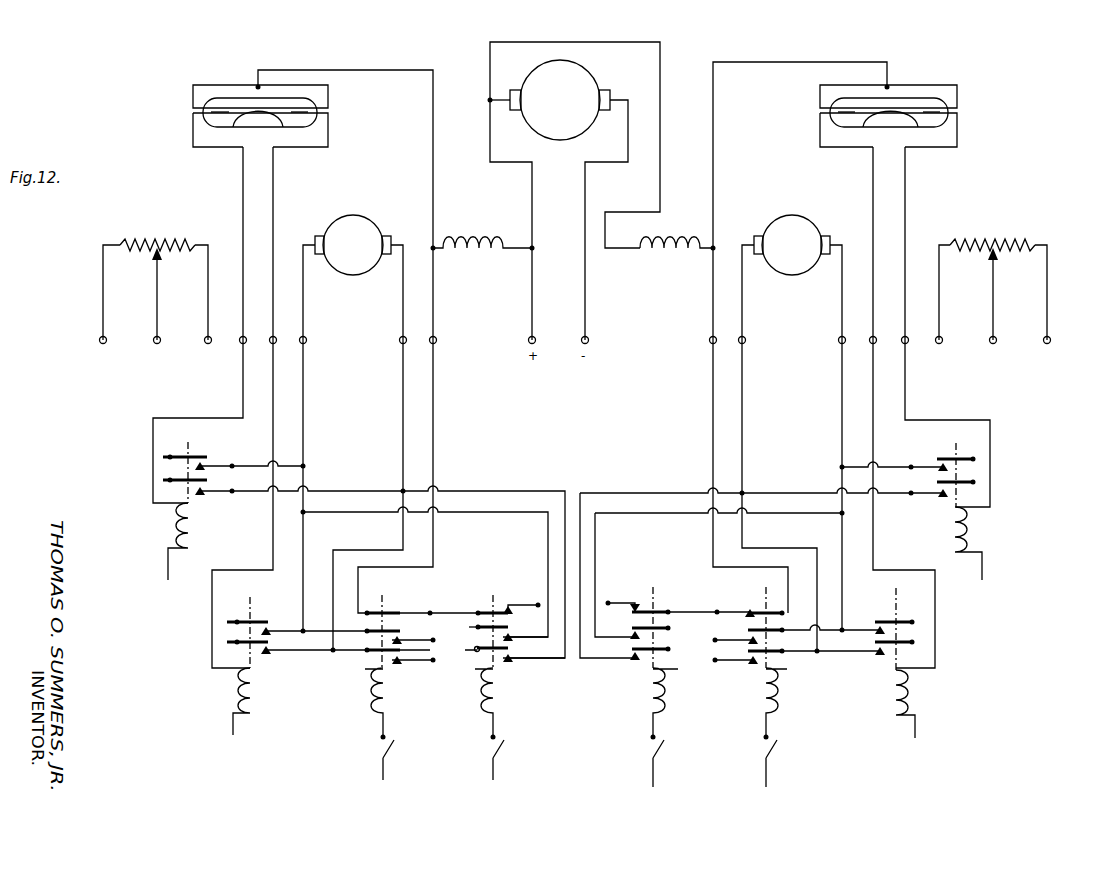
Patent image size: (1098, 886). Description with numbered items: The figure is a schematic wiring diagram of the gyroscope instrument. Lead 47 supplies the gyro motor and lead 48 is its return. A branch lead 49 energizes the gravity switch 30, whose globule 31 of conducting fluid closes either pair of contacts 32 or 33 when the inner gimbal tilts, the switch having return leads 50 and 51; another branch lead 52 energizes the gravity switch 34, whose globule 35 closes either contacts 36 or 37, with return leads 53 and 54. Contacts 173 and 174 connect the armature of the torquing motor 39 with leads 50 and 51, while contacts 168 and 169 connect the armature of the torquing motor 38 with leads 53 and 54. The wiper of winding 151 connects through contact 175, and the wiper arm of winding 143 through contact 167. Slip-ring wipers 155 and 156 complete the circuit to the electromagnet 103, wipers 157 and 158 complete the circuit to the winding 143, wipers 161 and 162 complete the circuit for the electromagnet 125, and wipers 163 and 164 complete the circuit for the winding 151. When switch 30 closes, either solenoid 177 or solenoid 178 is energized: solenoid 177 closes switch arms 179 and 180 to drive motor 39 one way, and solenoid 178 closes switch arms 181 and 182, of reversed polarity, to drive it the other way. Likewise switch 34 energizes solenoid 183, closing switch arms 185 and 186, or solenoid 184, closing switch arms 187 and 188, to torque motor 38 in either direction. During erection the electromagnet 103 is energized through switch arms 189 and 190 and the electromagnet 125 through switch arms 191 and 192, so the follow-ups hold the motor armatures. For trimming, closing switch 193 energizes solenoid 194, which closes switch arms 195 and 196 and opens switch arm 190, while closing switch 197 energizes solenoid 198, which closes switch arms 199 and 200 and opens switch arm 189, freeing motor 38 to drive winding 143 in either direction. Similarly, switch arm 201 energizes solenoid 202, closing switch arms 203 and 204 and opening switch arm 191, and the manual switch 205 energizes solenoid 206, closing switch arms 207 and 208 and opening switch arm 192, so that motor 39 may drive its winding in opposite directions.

The gravity switch 30 is at (228, 98).
The globule 31 is at (268, 112).
The contacts 32 is at (222, 114).
The contacts 33 is at (300, 114).
The electrolytic gravity switch 34 is at (922, 100).
The globule 35 is at (893, 114).
The contacts 36 is at (848, 114).
The contacts 37 is at (935, 114).
The torquing motor 38 is at (820, 232).
The torquing motor 39 is at (377, 233).
The lead 47 is at (500, 103).
The lead 48 is at (586, 188).
The branch lead 49 is at (402, 68).
The return lead 50 is at (243, 193).
The return lead 51 is at (273, 184).
The branch lead 52 is at (846, 62).
The return lead 53 is at (906, 188).
The return lead 54 is at (873, 182).
The electromagnet 103 is at (675, 243).
The electromagnet 125 is at (471, 243).
The winding 143 is at (1030, 243).
The winding 151 is at (178, 243).
The wiper 155 is at (713, 312).
The wiper 156 is at (661, 188).
The wiper 157 is at (1048, 297).
The wiper 158 is at (940, 295).
The wiper 161 is at (533, 290).
The wiper 162 is at (434, 290).
The wiper 163 is at (209, 270).
The wiper 164 is at (104, 288).
The electrical contact 167 is at (994, 288).
The electrical contact 168 is at (743, 366).
The electrical contact 169 is at (842, 397).
The electrical contact 173 is at (304, 372).
The electrical contact 174 is at (403, 398).
The electrical contact 175 is at (158, 298).
The solenoid 177 is at (180, 528).
The solenoid 178 is at (258, 696).
The switch arm 179 is at (200, 458).
The switch arm 180 is at (206, 480).
The switch arm 181 is at (259, 620).
The switch arm 182 is at (270, 631).
The solenoid 183 is at (965, 528).
The solenoid 184 is at (905, 693).
The switch arm 185 is at (964, 456).
The switch arm 186 is at (964, 479).
The switch arm 187 is at (906, 621).
The switch arm 188 is at (906, 641).
The switch arm 189 is at (656, 610).
The switch arm 190 is at (768, 610).
The switch arm 191 is at (496, 612).
The switch arm 192 is at (385, 612).
The switch 193 is at (778, 748).
The solenoid 194 is at (775, 692).
The switch arm 195 is at (756, 629).
The switch arm 196 is at (785, 655).
The switch 197 is at (665, 748).
The solenoid 198 is at (660, 690).
The switch arm 199 is at (670, 626).
The switch arm 200 is at (645, 656).
The switch arm 201 is at (500, 750).
The solenoid 202 is at (505, 690).
The switch arm 203 is at (510, 633).
The switch arm 204 is at (511, 650).
The manual switch 205 is at (390, 748).
The solenoid 206 is at (395, 690).
The switch arm 207 is at (398, 632).
The switch arm 208 is at (436, 659).